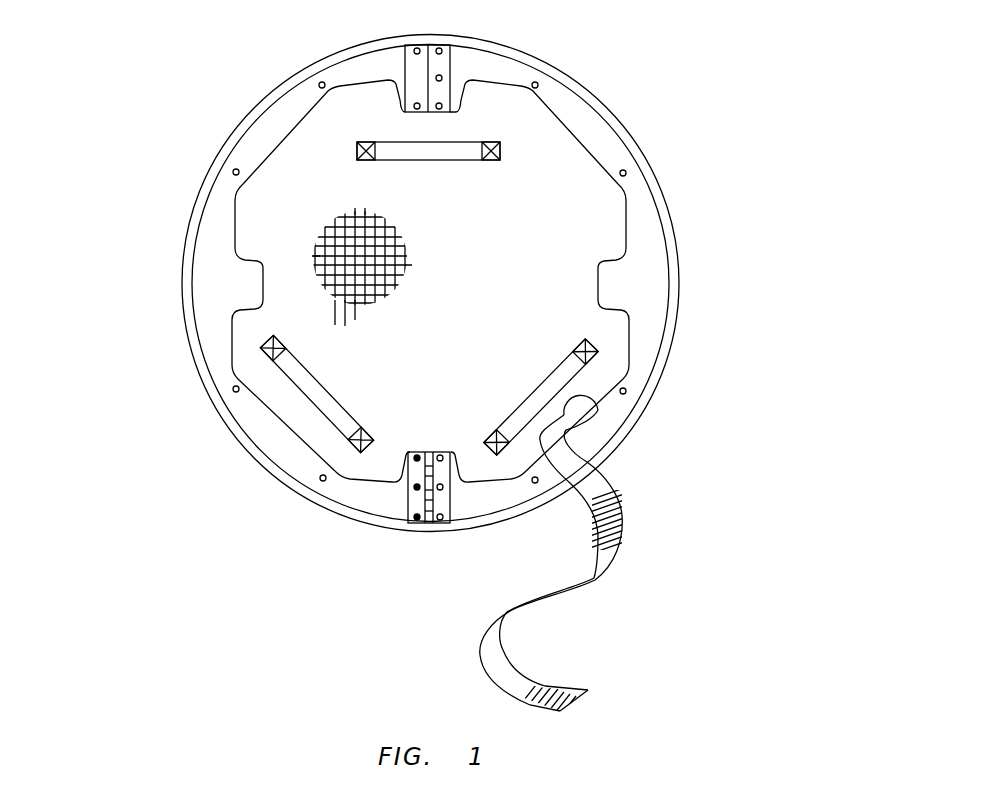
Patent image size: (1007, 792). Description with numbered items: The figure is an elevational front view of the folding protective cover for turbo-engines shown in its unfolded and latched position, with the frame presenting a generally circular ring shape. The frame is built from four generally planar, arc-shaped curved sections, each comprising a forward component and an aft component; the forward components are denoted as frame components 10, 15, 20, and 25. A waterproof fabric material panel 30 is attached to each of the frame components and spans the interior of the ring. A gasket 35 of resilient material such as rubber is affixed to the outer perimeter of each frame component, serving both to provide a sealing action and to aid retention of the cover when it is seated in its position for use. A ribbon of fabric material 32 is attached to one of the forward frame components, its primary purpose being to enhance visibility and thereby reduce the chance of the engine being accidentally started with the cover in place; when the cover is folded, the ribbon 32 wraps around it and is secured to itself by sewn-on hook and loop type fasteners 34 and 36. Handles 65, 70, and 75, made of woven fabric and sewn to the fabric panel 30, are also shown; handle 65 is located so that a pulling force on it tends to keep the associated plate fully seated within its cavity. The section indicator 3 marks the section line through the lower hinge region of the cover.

The section line 3- 3 is at (418, 423).
The forward frame component 10 is at (613, 153).
The forward frame component 15 is at (643, 303).
The forward frame component 20 is at (273, 438).
The forward frame component 25 is at (222, 201).
The waterproof fabric material panel 30 is at (297, 228).
The ribbon of fabric material 32 is at (547, 598).
The hook type fastener 34 is at (622, 515).
The gasket 35 is at (252, 99).
The loop type fastener 36 is at (560, 697).
The handle 65 is at (460, 148).
The handle 70 is at (567, 372).
The handle 75 is at (342, 422).